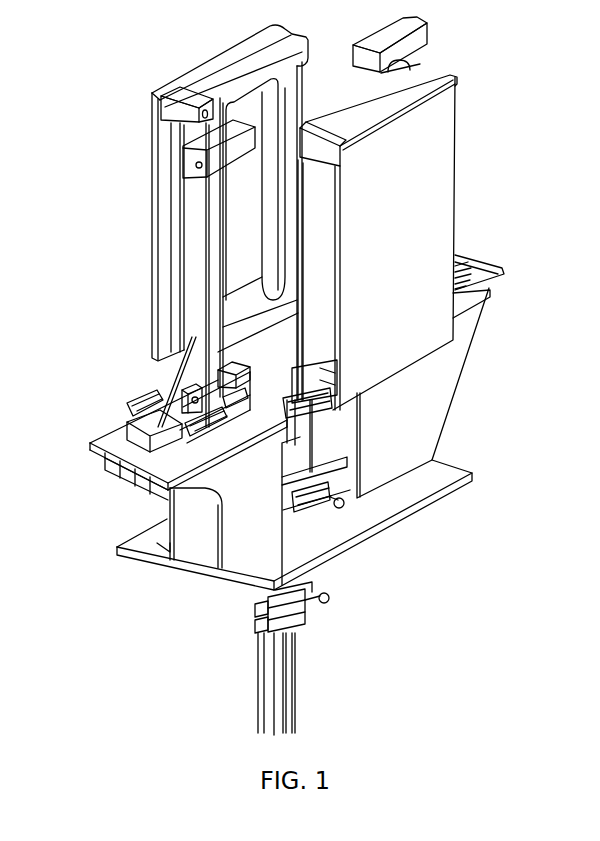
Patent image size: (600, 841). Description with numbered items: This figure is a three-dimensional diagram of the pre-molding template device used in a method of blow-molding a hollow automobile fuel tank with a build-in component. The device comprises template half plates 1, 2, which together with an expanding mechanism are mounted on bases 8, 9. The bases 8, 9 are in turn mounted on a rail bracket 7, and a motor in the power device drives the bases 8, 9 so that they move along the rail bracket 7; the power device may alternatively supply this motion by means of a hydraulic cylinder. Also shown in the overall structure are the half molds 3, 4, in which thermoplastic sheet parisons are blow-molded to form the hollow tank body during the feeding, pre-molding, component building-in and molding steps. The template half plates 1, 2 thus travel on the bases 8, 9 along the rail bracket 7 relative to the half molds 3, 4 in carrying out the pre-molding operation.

The template half plate 1 is at (215, 138).
The template half plate 2 is at (407, 48).
The half mold 3 is at (165, 212).
The half mold 4 is at (430, 222).
The rail bracket 7 is at (420, 435).
The base 8 is at (123, 438).
The base 9 is at (483, 272).